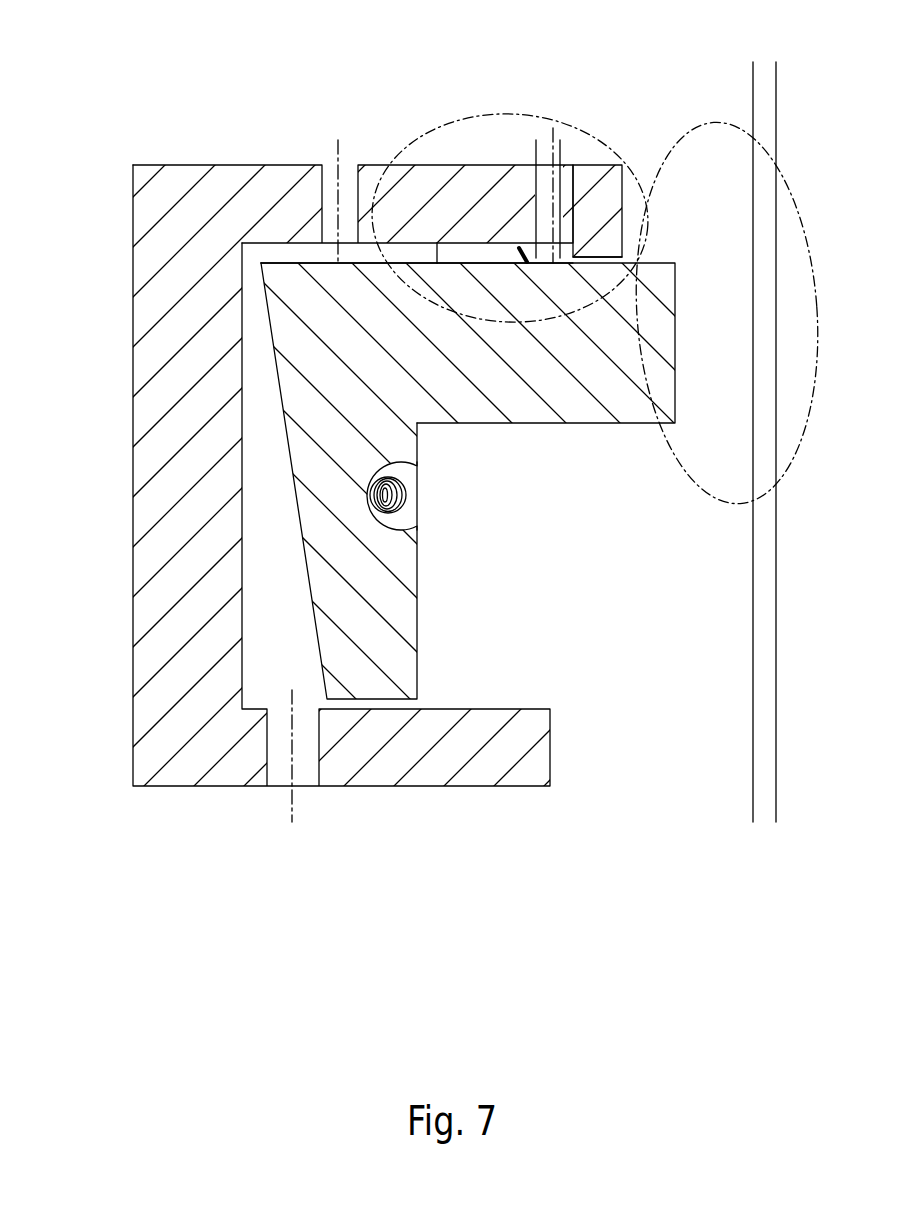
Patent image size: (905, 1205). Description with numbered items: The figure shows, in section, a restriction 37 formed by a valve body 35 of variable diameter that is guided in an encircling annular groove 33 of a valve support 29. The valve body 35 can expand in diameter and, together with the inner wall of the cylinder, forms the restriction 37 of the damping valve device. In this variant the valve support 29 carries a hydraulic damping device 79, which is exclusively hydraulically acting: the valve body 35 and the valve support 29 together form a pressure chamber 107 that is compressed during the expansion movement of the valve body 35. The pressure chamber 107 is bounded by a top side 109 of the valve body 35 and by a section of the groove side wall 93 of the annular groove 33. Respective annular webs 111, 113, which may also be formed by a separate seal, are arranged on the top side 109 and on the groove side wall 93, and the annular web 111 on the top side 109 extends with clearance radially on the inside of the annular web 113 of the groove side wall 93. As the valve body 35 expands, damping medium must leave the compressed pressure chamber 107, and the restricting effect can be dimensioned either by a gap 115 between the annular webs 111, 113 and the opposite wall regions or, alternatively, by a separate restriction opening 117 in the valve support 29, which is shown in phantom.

The valve support 29 is at (177, 637).
The annular groove 33 is at (275, 250).
The valve body 35 is at (322, 465).
The restriction 37 is at (697, 128).
The hydraulic damping device 79 is at (460, 117).
The groove side wall 93 is at (523, 258).
The pressure chamber 107 is at (492, 255).
The top side of the valve body 109 is at (536, 140).
The annular web 111 is at (418, 255).
The annular web 113 is at (598, 253).
The gap 115 is at (624, 252).
The restriction opening 117 is at (560, 140).